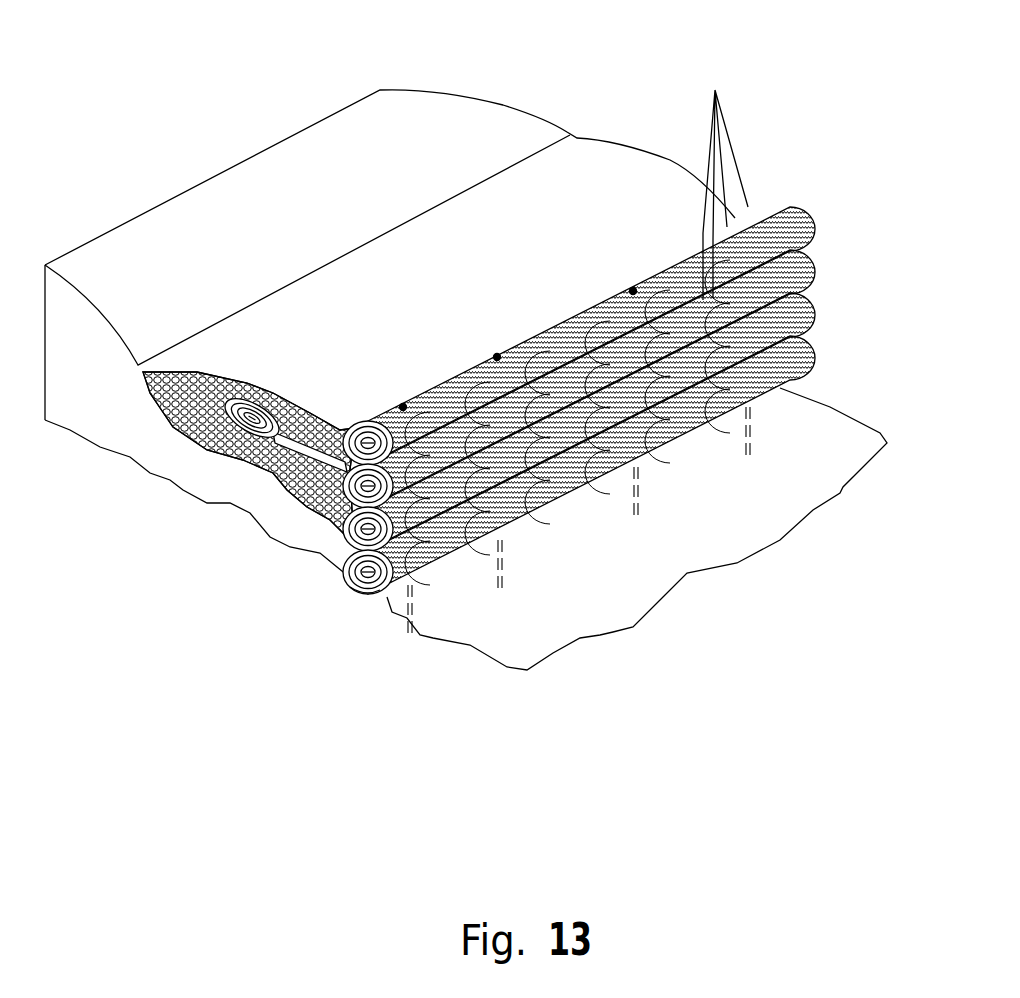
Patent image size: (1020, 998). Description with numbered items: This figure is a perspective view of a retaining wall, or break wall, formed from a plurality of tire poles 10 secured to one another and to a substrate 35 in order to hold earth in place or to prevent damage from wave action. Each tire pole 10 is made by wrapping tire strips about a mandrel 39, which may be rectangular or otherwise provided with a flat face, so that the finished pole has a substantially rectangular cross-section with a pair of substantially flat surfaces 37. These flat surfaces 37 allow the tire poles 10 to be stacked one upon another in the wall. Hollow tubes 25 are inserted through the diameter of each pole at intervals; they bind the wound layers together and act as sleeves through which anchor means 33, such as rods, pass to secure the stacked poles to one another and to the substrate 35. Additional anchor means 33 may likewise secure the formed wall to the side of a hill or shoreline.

The tire pole 10 is at (213, 450).
The tubes 25 is at (403, 405).
The anchor means 33 is at (287, 503).
The substrate 35 is at (473, 137).
The flat surface 37 is at (263, 393).
The mandrel 39 is at (363, 587).